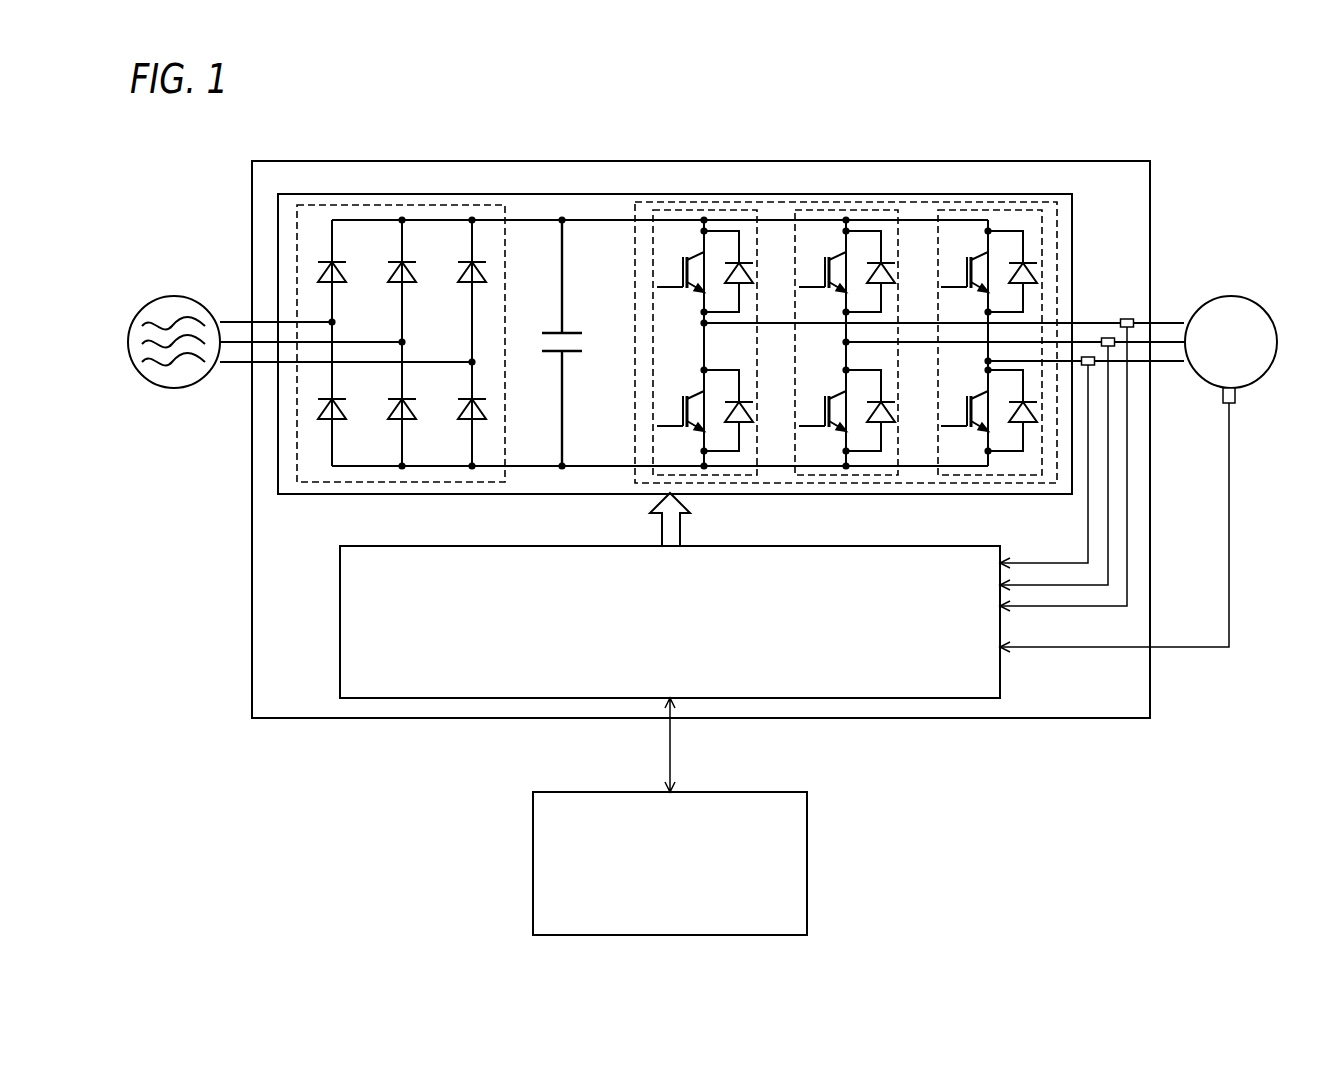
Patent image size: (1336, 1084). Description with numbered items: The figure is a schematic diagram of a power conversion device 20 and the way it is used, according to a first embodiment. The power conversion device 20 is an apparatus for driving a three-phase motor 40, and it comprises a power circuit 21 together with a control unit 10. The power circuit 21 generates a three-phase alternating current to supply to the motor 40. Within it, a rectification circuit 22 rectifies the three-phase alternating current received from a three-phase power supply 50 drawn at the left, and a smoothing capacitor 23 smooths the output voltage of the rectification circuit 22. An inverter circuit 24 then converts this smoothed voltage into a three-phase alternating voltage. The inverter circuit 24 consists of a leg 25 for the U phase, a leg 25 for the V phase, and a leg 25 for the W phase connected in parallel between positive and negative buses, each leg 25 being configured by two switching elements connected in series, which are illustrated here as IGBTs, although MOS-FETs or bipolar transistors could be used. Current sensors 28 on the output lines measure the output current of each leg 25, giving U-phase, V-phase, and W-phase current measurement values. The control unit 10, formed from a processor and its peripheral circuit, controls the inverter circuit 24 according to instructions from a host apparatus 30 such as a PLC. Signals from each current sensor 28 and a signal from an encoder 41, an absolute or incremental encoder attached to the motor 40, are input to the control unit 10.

The control unit 10 is at (940, 546).
The power conversion device 20 is at (1110, 161).
The power circuit 21 is at (580, 194).
The rectification circuit 22 is at (468, 205).
The smoothing capacitor 23 is at (575, 330).
The inverter circuit 24 is at (685, 202).
The leg 25 is at (742, 210).
The current sensor 28 is at (1127, 318).
The host apparatus 30 is at (807, 820).
The motor 40 is at (1230, 297).
The encoder 41 is at (1223, 405).
The three-phase power supply 50 is at (175, 295).